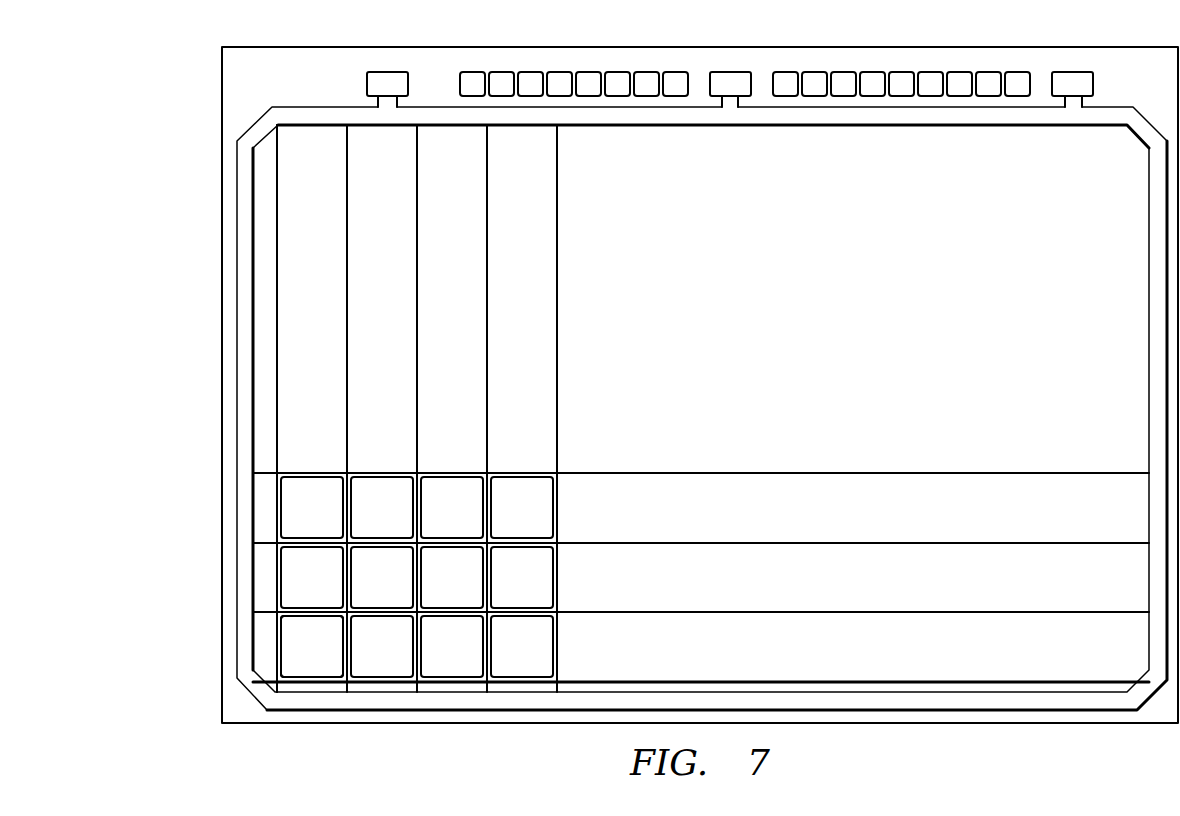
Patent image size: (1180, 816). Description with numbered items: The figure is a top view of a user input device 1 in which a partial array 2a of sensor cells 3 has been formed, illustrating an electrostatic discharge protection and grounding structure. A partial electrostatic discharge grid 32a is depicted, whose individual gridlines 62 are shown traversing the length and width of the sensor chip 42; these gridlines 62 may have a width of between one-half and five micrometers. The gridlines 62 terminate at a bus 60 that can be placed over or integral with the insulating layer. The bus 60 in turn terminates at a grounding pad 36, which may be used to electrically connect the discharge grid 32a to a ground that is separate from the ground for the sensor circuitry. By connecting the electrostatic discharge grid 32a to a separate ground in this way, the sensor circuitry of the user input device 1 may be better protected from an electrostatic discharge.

The user input device 1 is at (112, 308).
The partial array 2a is at (205, 468).
The sensor cell 3 is at (318, 657).
The partial electrostatic discharge grid 32a is at (450, 268).
The grounding pad 36 is at (367, 84).
The sensor chip 42 is at (918, 724).
The bus 60 is at (1048, 712).
The gridline 62 is at (277, 316).